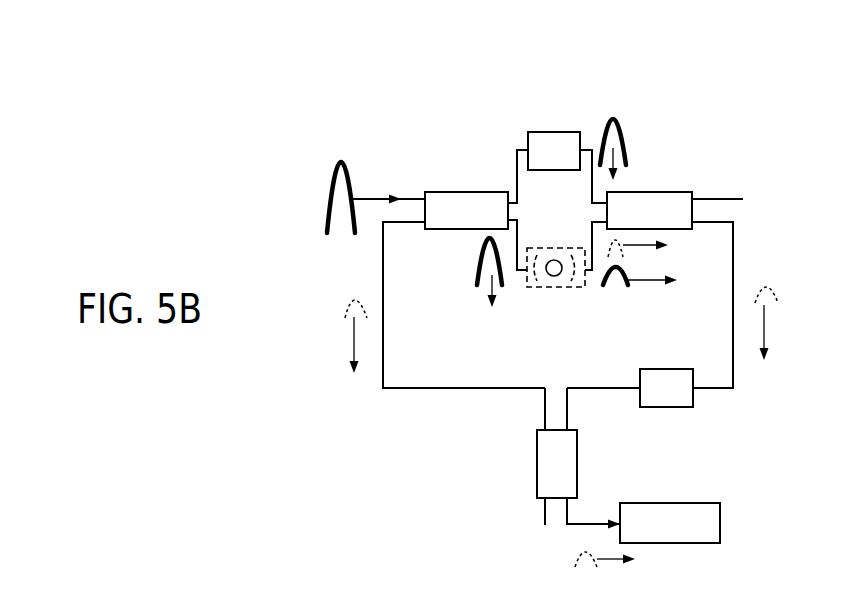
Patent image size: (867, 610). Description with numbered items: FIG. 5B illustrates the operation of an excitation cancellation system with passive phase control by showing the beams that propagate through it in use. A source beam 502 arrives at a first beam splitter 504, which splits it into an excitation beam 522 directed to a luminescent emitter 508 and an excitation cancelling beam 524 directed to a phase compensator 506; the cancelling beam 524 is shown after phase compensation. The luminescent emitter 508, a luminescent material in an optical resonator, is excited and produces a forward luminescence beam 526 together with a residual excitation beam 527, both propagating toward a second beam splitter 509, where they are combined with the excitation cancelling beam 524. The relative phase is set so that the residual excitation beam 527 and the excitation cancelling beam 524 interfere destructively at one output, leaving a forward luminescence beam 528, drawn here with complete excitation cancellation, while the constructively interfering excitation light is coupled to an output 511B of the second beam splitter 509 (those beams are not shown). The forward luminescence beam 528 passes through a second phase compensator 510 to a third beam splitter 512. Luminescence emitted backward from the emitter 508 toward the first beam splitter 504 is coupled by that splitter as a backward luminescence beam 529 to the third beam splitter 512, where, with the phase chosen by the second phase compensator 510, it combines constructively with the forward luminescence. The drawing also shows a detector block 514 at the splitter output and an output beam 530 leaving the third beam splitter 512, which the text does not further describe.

The source beam 502 is at (343, 163).
The first beam splitter 504 is at (465, 191).
The phase compensator 506 is at (580, 132).
The luminescent emitter 508 is at (553, 287).
The second beam splitter 509 is at (652, 191).
The second phase compensator 510 is at (667, 408).
The output 511B is at (712, 198).
The third beam splitter 512 is at (537, 458).
The single photon detector 514 is at (672, 503).
The excitation beam 522 is at (480, 250).
The excitation cancelling beam 524 is at (621, 130).
The forward luminescence beam 526 is at (623, 255).
The residual excitation beam 527 is at (627, 283).
The forward luminescence beam after cancellation 528 is at (787, 275).
The backward luminescence beam 529 is at (350, 300).
The output pulse 530 is at (582, 553).